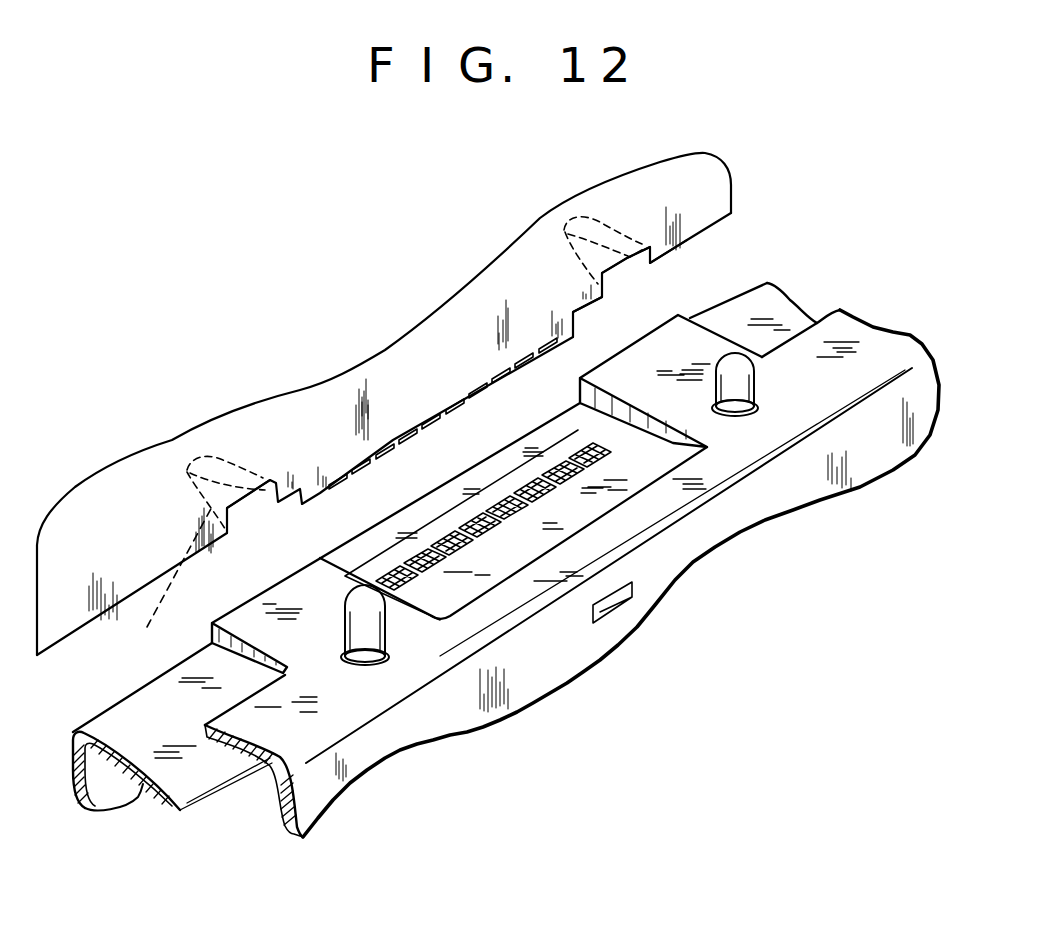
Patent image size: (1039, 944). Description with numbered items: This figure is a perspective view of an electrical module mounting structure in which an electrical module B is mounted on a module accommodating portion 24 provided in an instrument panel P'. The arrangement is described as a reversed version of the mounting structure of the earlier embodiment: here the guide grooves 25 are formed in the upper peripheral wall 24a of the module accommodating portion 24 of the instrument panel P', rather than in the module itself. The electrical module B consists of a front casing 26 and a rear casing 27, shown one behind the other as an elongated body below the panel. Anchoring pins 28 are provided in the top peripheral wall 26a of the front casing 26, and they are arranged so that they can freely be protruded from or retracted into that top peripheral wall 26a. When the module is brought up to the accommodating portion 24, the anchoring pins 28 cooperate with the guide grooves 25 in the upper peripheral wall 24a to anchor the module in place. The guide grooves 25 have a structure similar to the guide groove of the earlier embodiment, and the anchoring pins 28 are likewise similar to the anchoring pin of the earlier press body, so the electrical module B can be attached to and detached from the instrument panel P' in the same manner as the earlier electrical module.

The instrument panel P' is at (384, 404).
The electrical module B is at (930, 245).
The module accommodating portion 24 is at (627, 287).
The upper peripheral wall 24a is at (157, 585).
The guide groove 25 is at (276, 492).
The front casing 26 is at (915, 338).
The top peripheral wall 26a is at (727, 445).
The rear casing 27 is at (780, 313).
The anchoring pin 28 is at (756, 378).